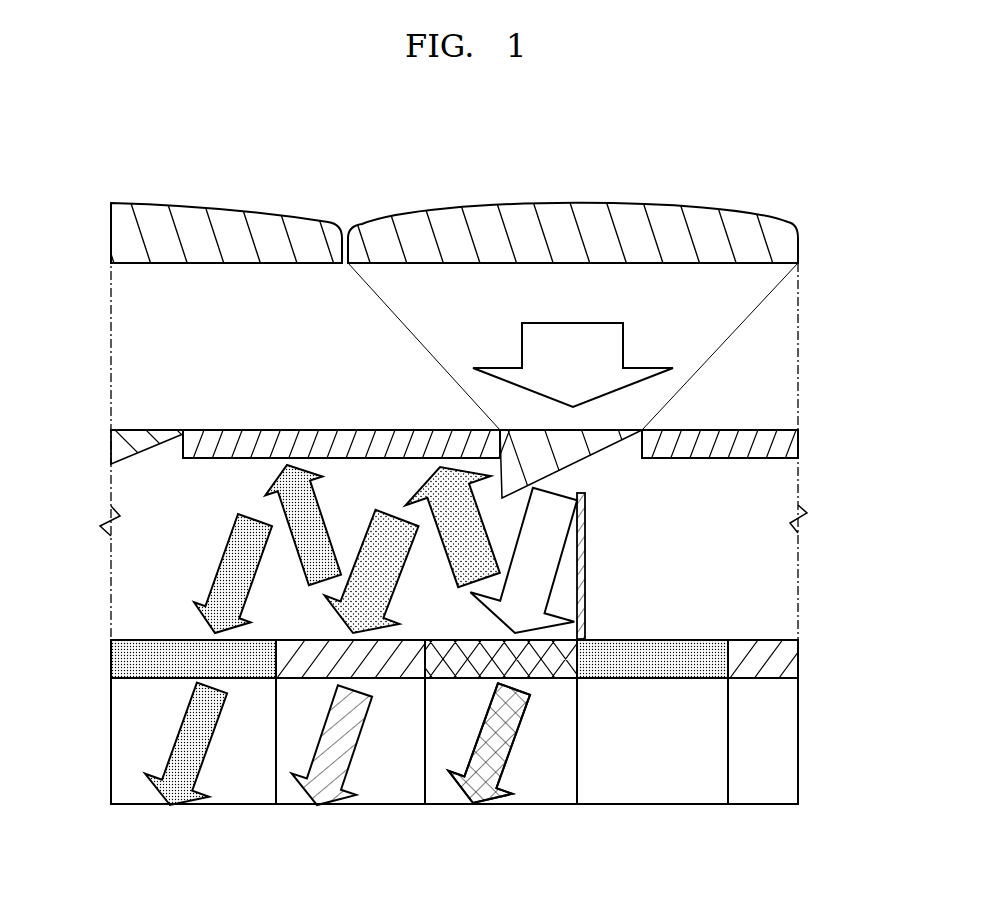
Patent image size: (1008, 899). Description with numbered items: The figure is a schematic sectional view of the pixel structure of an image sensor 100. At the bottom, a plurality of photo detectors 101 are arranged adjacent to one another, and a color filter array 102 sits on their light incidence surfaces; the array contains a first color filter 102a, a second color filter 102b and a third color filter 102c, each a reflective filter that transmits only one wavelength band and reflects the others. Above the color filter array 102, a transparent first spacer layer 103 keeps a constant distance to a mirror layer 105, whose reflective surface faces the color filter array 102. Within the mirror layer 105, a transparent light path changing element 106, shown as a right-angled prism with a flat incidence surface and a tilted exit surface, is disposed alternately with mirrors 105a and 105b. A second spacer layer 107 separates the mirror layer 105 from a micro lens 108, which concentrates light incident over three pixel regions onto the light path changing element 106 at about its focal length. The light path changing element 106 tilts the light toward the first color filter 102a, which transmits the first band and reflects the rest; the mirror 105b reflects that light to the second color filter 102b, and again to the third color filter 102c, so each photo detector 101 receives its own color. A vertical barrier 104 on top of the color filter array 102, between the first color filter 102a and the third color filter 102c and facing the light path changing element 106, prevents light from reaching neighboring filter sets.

The image sensor 100 is at (852, 179).
The photo detector 101 is at (790, 732).
The color filter array 102 is at (489, 751).
The first color filter 102a is at (558, 668).
The second color filter 102b is at (408, 668).
The third color filter 102c is at (247, 668).
The first spacer layer 103 is at (790, 548).
The barrier 104 is at (585, 610).
The mirror layer 105 is at (458, 461).
The mirror 105a is at (790, 438).
The mirror 105b is at (183, 452).
The light path changing element 106 is at (585, 453).
The second spacer layer 107 is at (790, 353).
The micro lens 108 is at (595, 214).